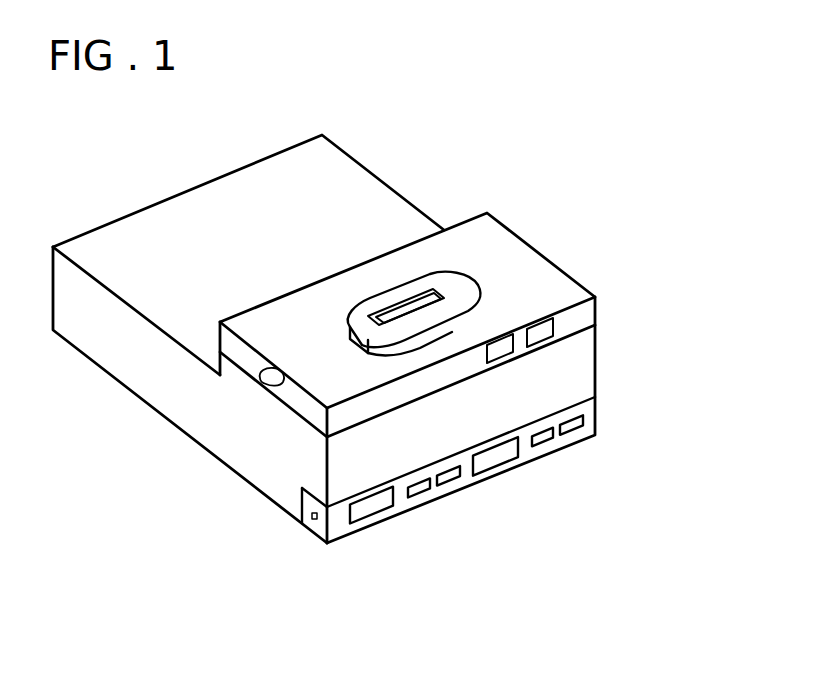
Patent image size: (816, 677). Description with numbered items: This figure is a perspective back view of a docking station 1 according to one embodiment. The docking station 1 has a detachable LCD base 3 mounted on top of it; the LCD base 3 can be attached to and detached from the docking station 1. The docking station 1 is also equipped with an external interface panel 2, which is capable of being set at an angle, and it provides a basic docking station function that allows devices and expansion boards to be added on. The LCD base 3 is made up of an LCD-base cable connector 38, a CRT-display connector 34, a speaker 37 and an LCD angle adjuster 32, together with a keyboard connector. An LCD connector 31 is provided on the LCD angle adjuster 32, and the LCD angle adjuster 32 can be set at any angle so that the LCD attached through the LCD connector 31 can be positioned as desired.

The docking station 1 is at (597, 350).
The external interface panel 2 is at (338, 523).
The LCD base 3 is at (522, 267).
The LCD connector 31 is at (405, 302).
The LCD angle adjuster 32 is at (458, 275).
The CRT-display connector 34 is at (500, 350).
The speaker 37 is at (263, 383).
The LCD-base cable connector 38 is at (597, 312).